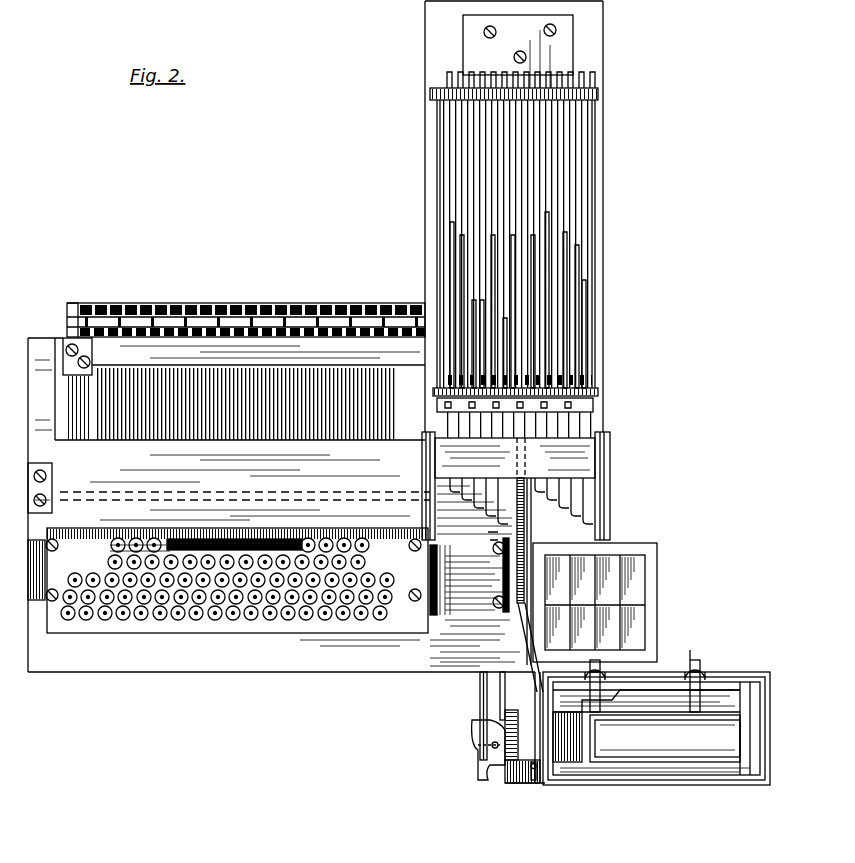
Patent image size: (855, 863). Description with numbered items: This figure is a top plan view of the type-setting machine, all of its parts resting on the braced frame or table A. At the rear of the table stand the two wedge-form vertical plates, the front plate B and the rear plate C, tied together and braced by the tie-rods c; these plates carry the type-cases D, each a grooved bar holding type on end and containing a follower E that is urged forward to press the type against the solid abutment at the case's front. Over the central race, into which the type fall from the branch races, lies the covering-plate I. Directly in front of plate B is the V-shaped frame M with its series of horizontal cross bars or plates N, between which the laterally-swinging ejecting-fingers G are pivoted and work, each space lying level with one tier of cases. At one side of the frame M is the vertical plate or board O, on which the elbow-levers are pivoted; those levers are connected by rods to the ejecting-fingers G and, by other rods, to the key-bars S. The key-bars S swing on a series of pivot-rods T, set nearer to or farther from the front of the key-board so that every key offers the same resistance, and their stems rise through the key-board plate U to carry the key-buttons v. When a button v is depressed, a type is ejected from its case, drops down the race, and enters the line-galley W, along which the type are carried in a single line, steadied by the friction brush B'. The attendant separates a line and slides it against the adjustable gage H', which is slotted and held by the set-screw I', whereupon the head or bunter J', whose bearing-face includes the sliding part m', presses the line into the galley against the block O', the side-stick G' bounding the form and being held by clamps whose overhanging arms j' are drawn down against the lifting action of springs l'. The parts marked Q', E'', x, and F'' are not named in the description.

The rear vertical plate C is at (430, 97).
The tie-rods c is at (612, 182).
The type-cases D is at (618, 228).
The follower E is at (511, 300).
The front vertical plate B is at (529, 388).
The ejecting-fingers G is at (531, 416).
The covering-plate I is at (571, 433).
The horizontal cross bars or plates N is at (515, 458).
The V-shaped frame M is at (608, 487).
The brush B' is at (502, 575).
The lever Q' is at (480, 541).
The line-galley W is at (528, 538).
The frame or table A is at (281, 505).
The pivot-rods T is at (246, 311).
The key-bars S is at (246, 401).
The upper key-board plate U is at (237, 592).
The key-buttons v is at (129, 559).
The vertical plate or board O is at (224, 631).
The bunter face part m' is at (506, 721).
The head or bunter J' is at (467, 750).
The head or block O' is at (497, 779).
The adjustable gage H' is at (519, 788).
The lower casing E'' is at (656, 742).
The set-screw I' is at (567, 762).
The side-stick G' is at (665, 737).
The plate opening x is at (660, 738).
The hooks or overhanging arms j' is at (661, 704).
The screw posts F'' is at (661, 682).
The springs l' is at (688, 649).